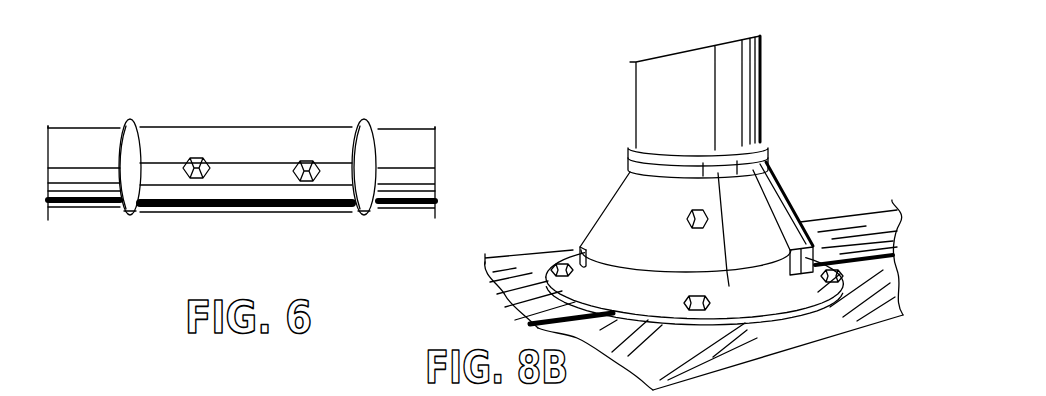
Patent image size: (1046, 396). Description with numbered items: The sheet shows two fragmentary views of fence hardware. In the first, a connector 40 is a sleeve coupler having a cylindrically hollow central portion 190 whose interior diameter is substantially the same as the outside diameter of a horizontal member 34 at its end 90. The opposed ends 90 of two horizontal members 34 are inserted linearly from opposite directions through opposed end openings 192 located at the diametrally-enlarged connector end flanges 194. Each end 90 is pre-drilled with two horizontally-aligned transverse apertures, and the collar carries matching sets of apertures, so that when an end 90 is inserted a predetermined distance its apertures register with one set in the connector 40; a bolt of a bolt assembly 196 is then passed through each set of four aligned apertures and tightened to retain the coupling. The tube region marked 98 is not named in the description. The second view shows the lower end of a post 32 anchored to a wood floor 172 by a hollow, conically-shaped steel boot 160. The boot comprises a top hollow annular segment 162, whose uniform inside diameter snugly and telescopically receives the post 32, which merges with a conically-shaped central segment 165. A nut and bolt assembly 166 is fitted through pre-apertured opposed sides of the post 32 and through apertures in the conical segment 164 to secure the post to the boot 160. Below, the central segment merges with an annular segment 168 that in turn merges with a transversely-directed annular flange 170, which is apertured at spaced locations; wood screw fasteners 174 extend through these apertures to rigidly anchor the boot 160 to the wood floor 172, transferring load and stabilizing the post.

In FIG. 8B, the post 32 is at (628, 90).
In FIG. 6, the horizontal member 34 is at (72, 124).
In FIG. 6, the connector 40 is at (246, 149).
In FIG. 6, the end 90 is at (113, 182).
In FIG. 6, the tube section 98 is at (66, 166).
In FIG. 8B, the boot 160 is at (792, 192).
In FIG. 8B, the top hollow annular segment 162 is at (767, 168).
In FIG. 8B, the conical segment 164 is at (763, 147).
In FIG. 8B, the conically-shaped central segment 165 is at (731, 247).
In FIG. 8B, the nut and bolt assembly 166 is at (686, 211).
In FIG. 8B, the annular segment 168 is at (580, 246).
In FIG. 8B, the annular flange 170 is at (762, 300).
In FIG. 8B, the wood floor 172 is at (656, 355).
In FIG. 8B, the wood screw fasteners 174 is at (684, 298).
In FIG. 6, the central portion 190 is at (258, 159).
In FIG. 6, the end openings 192 is at (120, 138).
In FIG. 6, the connector end flanges 194 is at (129, 209).
In FIG. 6, the bolt assembly 196 is at (299, 152).